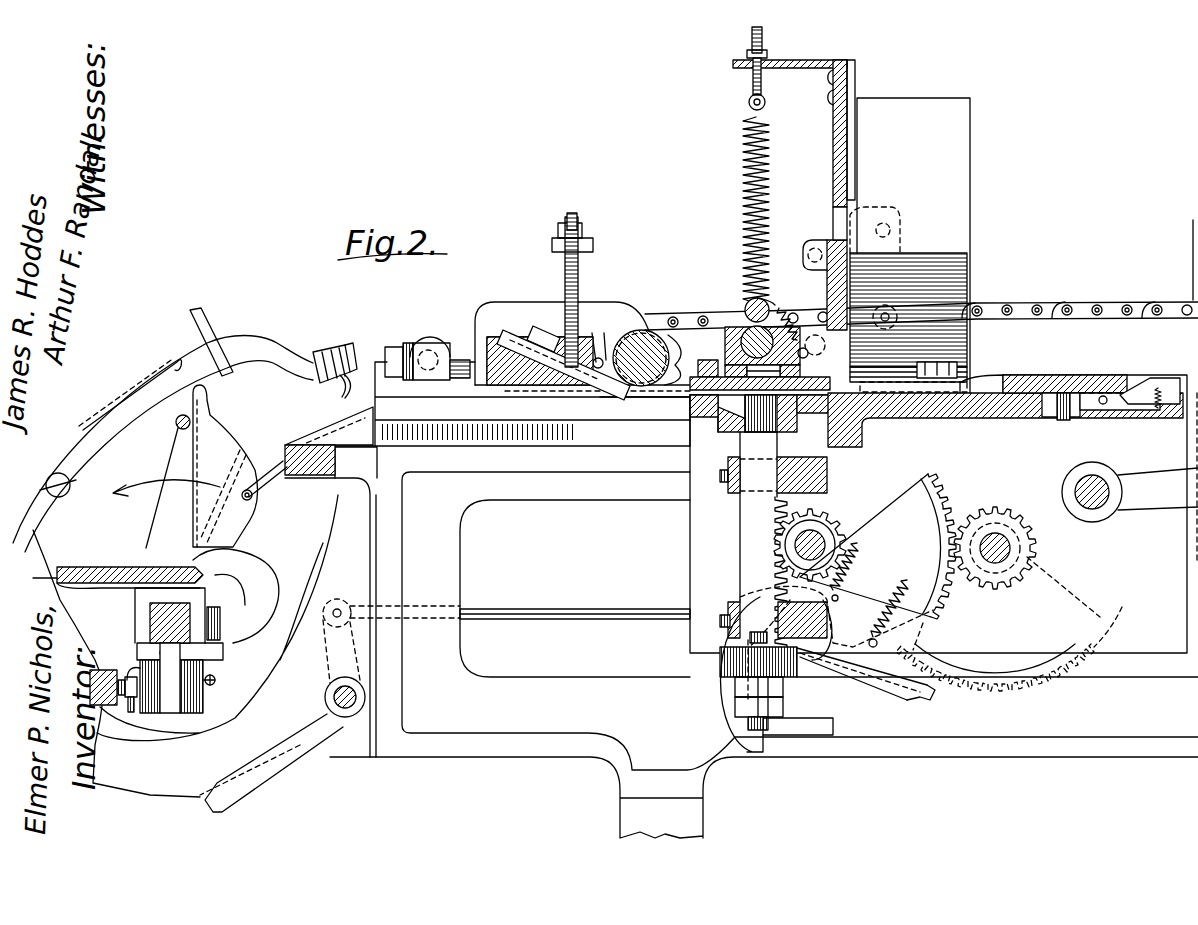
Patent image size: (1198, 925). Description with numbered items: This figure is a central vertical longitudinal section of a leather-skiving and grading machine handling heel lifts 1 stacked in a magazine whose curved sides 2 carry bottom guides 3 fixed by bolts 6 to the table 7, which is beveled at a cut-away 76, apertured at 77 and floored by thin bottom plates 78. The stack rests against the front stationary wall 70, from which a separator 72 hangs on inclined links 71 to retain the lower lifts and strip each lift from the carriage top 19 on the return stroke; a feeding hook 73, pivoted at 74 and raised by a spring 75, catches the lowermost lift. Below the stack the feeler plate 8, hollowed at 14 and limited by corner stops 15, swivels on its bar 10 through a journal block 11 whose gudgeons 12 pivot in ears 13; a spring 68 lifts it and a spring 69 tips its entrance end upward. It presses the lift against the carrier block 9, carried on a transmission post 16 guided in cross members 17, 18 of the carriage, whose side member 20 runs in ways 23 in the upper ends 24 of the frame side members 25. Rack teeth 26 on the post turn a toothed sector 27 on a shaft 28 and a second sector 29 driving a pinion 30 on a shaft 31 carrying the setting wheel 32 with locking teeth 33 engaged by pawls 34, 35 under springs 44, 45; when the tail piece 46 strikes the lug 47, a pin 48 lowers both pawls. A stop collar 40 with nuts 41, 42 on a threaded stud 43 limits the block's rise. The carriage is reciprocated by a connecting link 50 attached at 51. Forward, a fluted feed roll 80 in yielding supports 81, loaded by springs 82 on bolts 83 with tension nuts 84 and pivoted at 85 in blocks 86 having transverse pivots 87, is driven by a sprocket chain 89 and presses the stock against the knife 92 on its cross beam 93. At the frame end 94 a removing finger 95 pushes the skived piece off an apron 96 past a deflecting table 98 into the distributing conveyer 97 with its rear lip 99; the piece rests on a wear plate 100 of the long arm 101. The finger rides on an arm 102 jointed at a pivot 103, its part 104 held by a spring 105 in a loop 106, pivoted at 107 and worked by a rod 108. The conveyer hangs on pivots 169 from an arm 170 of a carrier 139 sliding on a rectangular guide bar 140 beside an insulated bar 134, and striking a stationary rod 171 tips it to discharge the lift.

The heel lifts 1 is at (213, 527).
The curved sides of magazine 2 is at (970, 160).
The bottom guides 3 is at (963, 373).
The bolts 6 is at (930, 352).
The table 7 is at (1063, 390).
The feeler plate 8 is at (712, 230).
The transmission and carrier block 9 is at (690, 420).
The supporting and actuating bar 10 is at (745, 312).
The central journal block 11 is at (745, 305).
The gudgeons 12 is at (790, 313).
The ears 13 is at (713, 313).
The hollowed underside 14 is at (690, 440).
The corner stops 15 is at (678, 355).
The transmission post 16 is at (745, 513).
The cross member 17 is at (833, 465).
The cross member 18 is at (812, 650).
The carriage top 19 is at (980, 418).
The side member of carriage 20 is at (1150, 645).
The ways 23 is at (463, 482).
The upper ends of frame side members 24 is at (532, 458).
The side members of main frame 25 is at (530, 700).
The rack teeth 26 is at (782, 520).
The toothed sector 27 is at (773, 542).
The shaft 28 is at (822, 543).
The toothed sector 29 is at (948, 503).
The pinion 30 is at (1002, 518).
The shaft 31 is at (1003, 541).
The setting wheel 32 is at (1108, 618).
The locking teeth 33 is at (1013, 686).
The pawl 34 is at (900, 697).
The pawl 35 is at (927, 700).
The stop collar 40 is at (720, 660).
The nut 41 is at (735, 690).
The nut 42 is at (735, 708).
The threaded stud 43 is at (748, 725).
The spring 44 is at (862, 557).
The spring 45 is at (905, 598).
The tail piece 46 is at (757, 752).
The lug 47 is at (818, 735).
The pin 48 is at (827, 623).
The connecting link 50 is at (1170, 498).
The carriage connection 51 is at (1097, 510).
The spring 68 is at (743, 140).
The spring 69 is at (773, 300).
The front stationary wall 70 is at (833, 137).
The links 71 is at (862, 223).
The separator 72 is at (837, 242).
The feeding hook 73 is at (1150, 382).
The pivot 74 is at (1103, 404).
The spring 75 is at (1157, 410).
The beveled cut-away 76 is at (1095, 393).
The aperture 77 is at (1012, 378).
The bottom plates 78 is at (983, 383).
The fluted feed roll 80 is at (632, 330).
The yielding supports 81 is at (596, 305).
The springs 82 is at (565, 280).
The bolts 83 is at (575, 213).
The tension nuts 84 is at (555, 240).
The longitudinal pivots 85 is at (440, 352).
The blocks 86 is at (415, 345).
The transverse pivots 87 is at (428, 350).
The sprocket chain 89 is at (1083, 304).
The knife 92 is at (530, 334).
The cross beam 93 is at (493, 340).
The frame end 94 is at (348, 356).
The removing finger 95 is at (340, 378).
The apron 96 is at (577, 395).
The distributing conveyer 97 is at (220, 457).
The deflecting table 98 is at (350, 443).
The rear lip 99 is at (276, 467).
The wear plate 100 is at (148, 547).
The long arm 101 is at (140, 574).
The arm 102 is at (258, 790).
The pivot 103 is at (54, 474).
The arm part 104 is at (250, 340).
The spring 105 is at (160, 395).
The loop 106 is at (215, 302).
The pivot 107 is at (365, 698).
The rod 108 is at (607, 616).
The insulated bar 134 is at (107, 672).
The carrier 139 is at (207, 620).
The rectangular guide bar 140 is at (192, 602).
The pivots 169 is at (255, 497).
The arm 170 is at (265, 570).
The stationary rod 171 is at (176, 425).